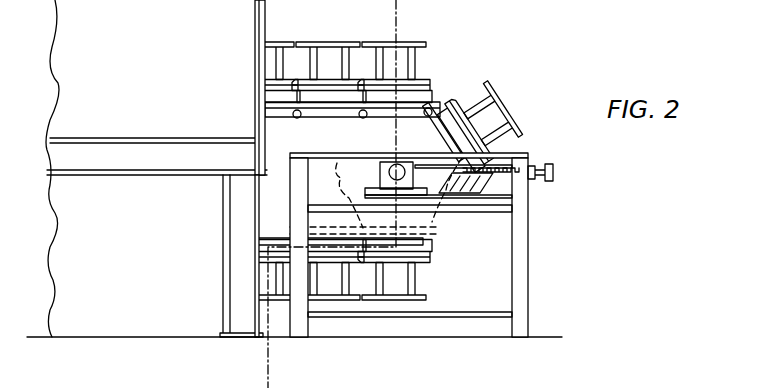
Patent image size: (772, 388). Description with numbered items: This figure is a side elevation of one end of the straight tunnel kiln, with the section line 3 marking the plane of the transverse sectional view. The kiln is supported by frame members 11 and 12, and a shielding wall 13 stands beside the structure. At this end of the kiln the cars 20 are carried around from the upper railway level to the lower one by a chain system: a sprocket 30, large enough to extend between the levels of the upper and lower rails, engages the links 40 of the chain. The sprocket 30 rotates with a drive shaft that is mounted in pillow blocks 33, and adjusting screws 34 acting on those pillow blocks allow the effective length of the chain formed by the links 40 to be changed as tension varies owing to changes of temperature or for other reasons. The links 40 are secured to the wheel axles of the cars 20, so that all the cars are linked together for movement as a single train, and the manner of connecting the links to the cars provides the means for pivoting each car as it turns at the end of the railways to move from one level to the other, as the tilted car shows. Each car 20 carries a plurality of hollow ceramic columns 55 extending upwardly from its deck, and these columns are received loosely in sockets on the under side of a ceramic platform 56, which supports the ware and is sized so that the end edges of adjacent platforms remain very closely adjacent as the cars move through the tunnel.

The section line 3- 3 is at (380, 31).
The frame member 11 is at (174, 160).
The frame member 12 is at (238, 231).
The shielding wall 13 is at (150, 258).
The car 20 is at (510, 98).
The sprocket 30 is at (363, 147).
The pillow block 33 is at (382, 179).
The adjusting screw 34 is at (553, 173).
The link 40 is at (436, 135).
The hollow ceramic column 55 is at (352, 63).
The ceramic platform 56 is at (322, 42).